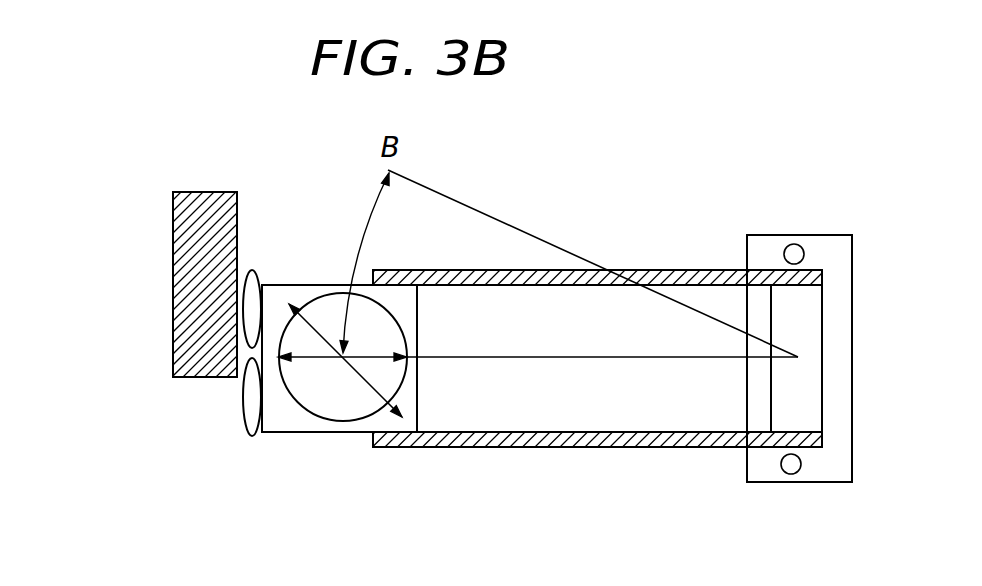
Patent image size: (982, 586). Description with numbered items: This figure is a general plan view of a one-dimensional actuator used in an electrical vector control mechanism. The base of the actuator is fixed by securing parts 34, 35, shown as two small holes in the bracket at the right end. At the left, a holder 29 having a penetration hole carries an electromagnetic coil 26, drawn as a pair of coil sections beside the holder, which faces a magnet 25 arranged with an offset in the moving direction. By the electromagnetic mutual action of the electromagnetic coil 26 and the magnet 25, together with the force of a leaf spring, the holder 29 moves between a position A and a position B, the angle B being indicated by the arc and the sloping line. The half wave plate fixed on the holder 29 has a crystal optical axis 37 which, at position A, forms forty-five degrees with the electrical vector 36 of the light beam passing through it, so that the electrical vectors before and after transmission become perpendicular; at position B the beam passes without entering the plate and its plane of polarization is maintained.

The magnet 25 is at (172, 282).
The electromagnetic coil 26 is at (246, 427).
The holder 29 is at (300, 433).
The securing part 34 is at (792, 244).
The securing part 35 is at (791, 474).
The electrical vector 36 is at (367, 353).
The crystal optical axis 37 is at (365, 380).